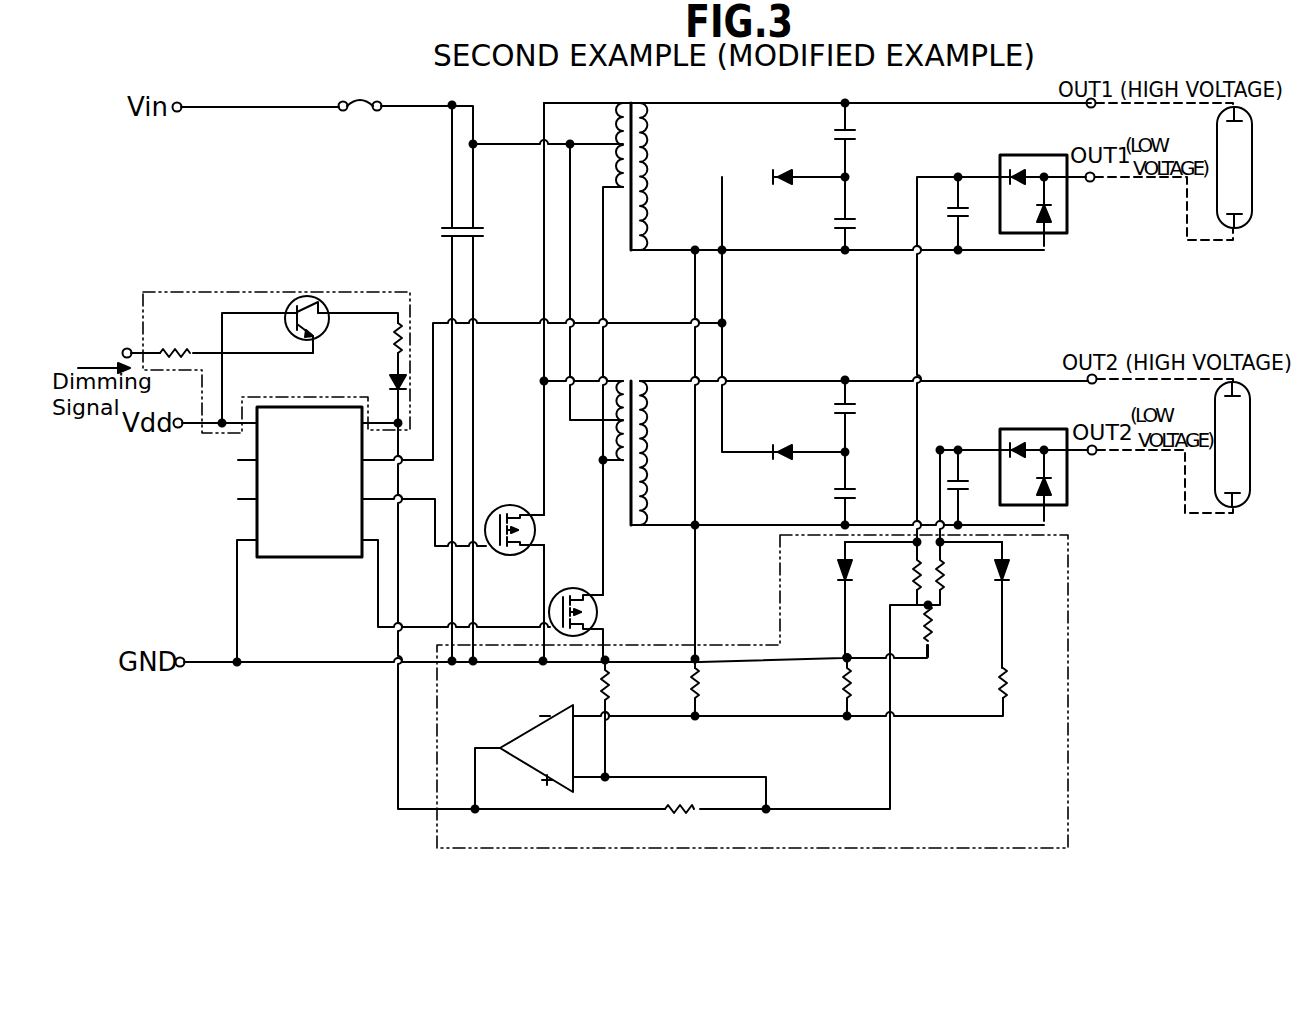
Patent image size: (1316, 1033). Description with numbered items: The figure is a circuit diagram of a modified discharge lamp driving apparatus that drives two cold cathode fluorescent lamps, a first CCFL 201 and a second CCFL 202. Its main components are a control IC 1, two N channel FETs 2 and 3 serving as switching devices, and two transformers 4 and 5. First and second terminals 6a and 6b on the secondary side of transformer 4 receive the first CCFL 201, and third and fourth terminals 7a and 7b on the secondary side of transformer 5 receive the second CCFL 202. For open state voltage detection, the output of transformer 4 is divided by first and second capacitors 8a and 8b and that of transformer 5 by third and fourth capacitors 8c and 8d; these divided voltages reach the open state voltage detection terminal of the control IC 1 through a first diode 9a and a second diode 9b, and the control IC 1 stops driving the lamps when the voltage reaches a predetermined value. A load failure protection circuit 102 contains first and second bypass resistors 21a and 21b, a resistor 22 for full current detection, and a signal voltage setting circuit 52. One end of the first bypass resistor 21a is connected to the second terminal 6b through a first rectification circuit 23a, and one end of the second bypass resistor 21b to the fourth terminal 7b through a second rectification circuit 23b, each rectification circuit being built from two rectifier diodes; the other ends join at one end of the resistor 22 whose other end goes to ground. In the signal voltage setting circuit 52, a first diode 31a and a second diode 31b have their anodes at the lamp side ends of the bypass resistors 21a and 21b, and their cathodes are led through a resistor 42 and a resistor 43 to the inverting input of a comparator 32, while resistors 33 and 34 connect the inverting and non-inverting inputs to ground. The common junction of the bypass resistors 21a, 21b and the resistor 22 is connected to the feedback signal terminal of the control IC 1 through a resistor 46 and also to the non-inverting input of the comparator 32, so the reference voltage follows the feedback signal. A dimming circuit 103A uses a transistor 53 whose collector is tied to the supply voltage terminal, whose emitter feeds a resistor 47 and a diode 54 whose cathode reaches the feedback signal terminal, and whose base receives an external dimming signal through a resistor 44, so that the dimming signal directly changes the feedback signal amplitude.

The control IC 1 is at (287, 560).
The N channel FET 2 is at (528, 512).
The N channel FET 3 is at (590, 590).
The transformer 4 is at (645, 105).
The transformer 5 is at (644, 385).
The first terminal 6a is at (1094, 107).
The second terminal 6b is at (1092, 182).
The third terminal 7a is at (1094, 384).
The fourth terminal 7b is at (1093, 455).
The first capacitor 8a is at (856, 128).
The second capacitor 8b is at (856, 226).
The third capacitor 8c is at (856, 400).
The fourth capacitor 8d is at (856, 485).
The first diode for open state voltage detection 9a is at (785, 170).
The second diode for open state voltage detection 9b is at (786, 445).
The first bypass resistor 21a is at (915, 570).
The second bypass resistor 21b is at (942, 578).
The resistor for full current detection 22 is at (932, 638).
The first rectification circuit 23a is at (1068, 222).
The second rectification circuit 23b is at (1000, 443).
The first diode 31a is at (838, 578).
The second diode 31b is at (1008, 578).
The comparator 32 is at (528, 730).
The resistor 33 is at (700, 680).
The resistor 34 is at (610, 680).
The resistor 42 is at (843, 690).
The resistor 43 is at (1010, 684).
The resistor 44 is at (175, 350).
The resistor 46 is at (694, 815).
The resistor 47 is at (405, 335).
The signal voltage setting circuit 52 is at (835, 562).
The transistor 53 is at (315, 332).
The diode 54 is at (390, 383).
The load failure protection circuit 102 is at (1072, 600).
The dimming circuit 103A is at (310, 290).
The CCFL 201 is at (1252, 157).
The CCFL 202 is at (1250, 468).